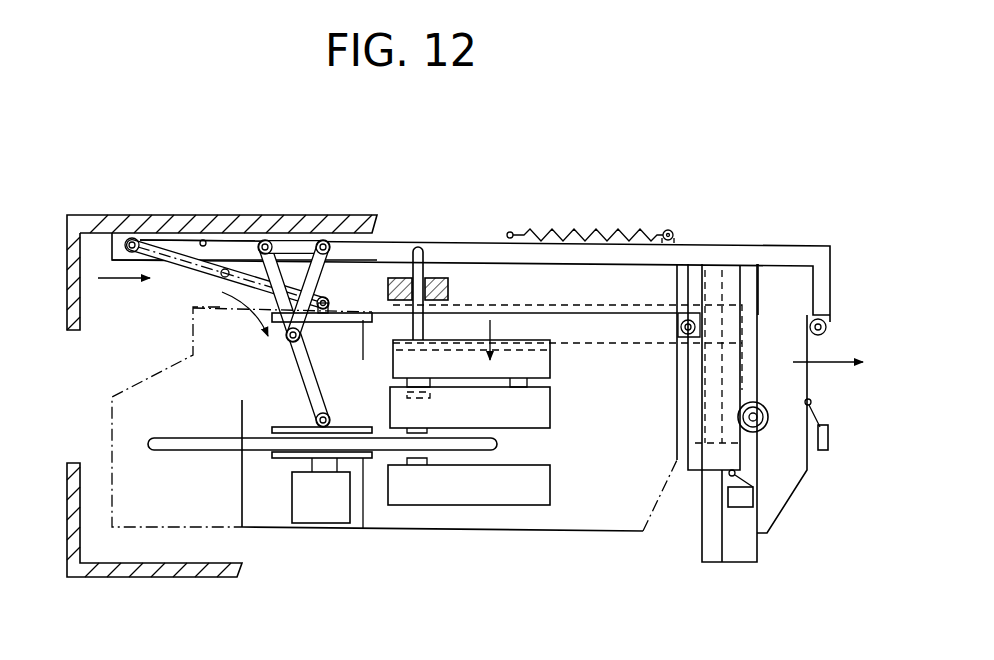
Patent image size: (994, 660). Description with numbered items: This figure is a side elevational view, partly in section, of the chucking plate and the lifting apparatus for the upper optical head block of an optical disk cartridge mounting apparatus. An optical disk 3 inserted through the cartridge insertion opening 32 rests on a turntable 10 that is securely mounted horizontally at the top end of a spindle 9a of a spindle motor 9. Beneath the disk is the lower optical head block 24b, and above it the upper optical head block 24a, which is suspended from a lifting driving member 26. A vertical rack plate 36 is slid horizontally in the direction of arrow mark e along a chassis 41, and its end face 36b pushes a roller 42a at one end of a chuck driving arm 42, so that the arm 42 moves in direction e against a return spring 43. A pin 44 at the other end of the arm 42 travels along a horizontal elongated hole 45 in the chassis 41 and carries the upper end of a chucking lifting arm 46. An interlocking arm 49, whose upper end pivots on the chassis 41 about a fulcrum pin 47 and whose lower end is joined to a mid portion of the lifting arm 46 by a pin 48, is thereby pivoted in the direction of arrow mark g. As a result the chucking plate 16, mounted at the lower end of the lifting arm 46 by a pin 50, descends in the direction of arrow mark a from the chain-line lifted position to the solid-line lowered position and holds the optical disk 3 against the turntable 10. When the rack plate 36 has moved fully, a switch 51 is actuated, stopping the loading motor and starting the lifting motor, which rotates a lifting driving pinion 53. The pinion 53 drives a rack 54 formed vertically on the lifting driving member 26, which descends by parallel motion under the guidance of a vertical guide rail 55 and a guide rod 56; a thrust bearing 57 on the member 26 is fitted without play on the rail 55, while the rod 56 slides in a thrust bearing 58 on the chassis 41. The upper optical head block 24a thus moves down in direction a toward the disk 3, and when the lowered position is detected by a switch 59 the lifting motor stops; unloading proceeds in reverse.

The optical disk 3 is at (167, 450).
The spindle motor 9 is at (312, 505).
The spindle 9a is at (325, 466).
The turntable 10 is at (363, 462).
The chucking plate 16 is at (378, 312).
The upper optical head block 24a is at (540, 410).
The lower optical head block 24b is at (538, 482).
The lifting driving member 26 is at (623, 350).
The cartridge insertion opening 32 is at (75, 332).
The rack plate 36 is at (112, 437).
The end face 36b is at (809, 350).
The chassis 41 is at (117, 230).
The chuck driving arm 42 is at (712, 262).
The roller 42a is at (824, 320).
The return spring 43 is at (598, 232).
The pin 44 is at (135, 240).
The horizontal elongated hole 45 is at (203, 240).
The chucking lifting arm 46 is at (200, 266).
The fulcrum pin 47 is at (325, 242).
The pin 48 is at (227, 270).
The interlocking arm 49 is at (330, 283).
The pin 50 is at (328, 412).
The switch 51 is at (823, 451).
The lifting driving pinion 53 is at (764, 430).
The rack 54 is at (745, 360).
The vertical guide rail 55 is at (717, 282).
The guide rod 56 is at (423, 250).
The thrust bearing 57 is at (700, 472).
The thrust bearing 58 is at (446, 283).
The switch 59 is at (738, 508).
The arrow mark a is at (492, 345).
The arrow mark e is at (123, 283).
The arrow mark g is at (235, 336).